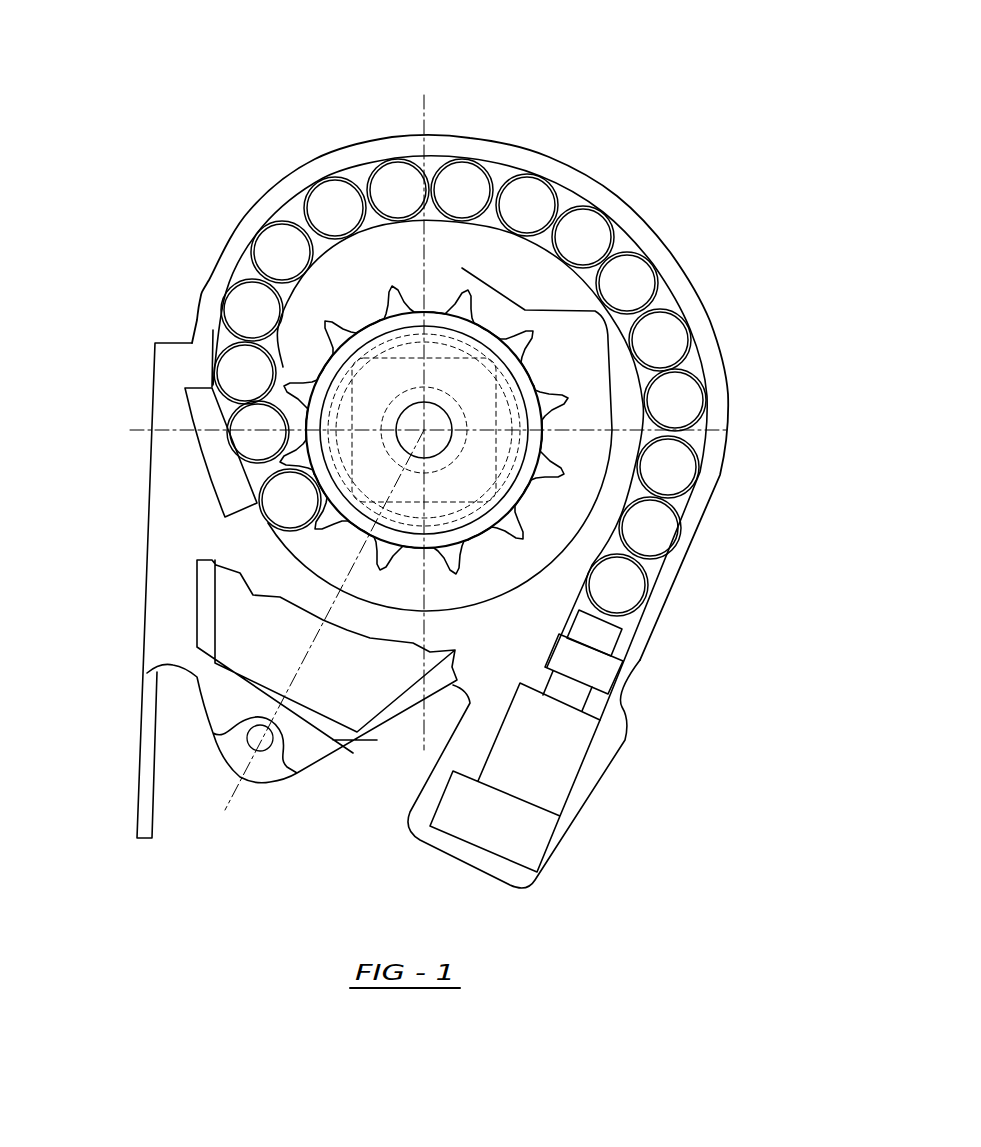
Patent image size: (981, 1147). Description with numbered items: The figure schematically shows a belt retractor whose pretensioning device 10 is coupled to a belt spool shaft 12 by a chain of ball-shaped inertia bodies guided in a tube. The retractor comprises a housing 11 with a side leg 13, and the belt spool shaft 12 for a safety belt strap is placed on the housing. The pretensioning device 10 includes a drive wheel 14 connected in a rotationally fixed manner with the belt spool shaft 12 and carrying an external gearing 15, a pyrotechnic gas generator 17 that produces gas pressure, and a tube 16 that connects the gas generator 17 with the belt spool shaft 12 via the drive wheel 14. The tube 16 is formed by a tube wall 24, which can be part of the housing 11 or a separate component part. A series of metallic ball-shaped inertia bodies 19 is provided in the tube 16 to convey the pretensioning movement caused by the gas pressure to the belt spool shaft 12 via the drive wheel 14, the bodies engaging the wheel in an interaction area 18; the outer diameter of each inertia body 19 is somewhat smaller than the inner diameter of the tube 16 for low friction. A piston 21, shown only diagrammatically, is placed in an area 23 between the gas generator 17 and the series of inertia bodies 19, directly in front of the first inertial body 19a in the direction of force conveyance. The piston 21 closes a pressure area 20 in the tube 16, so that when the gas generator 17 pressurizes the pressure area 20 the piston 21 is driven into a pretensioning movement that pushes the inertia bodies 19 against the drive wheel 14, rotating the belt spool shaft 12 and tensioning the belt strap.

The pretensioning device 10 is at (504, 130).
The housing 11 is at (658, 252).
The belt spool shaft 12 is at (433, 415).
The side leg 13 is at (197, 532).
The drive wheel 14 is at (557, 470).
The external gearing 15 is at (608, 514).
The tube 16 is at (565, 197).
The gas generator 17 is at (550, 765).
The interaction area 18 is at (205, 474).
The inertia bodies 19 is at (272, 248).
The first inertial body 19a is at (630, 598).
The pressure area 20 is at (560, 690).
The piston 21 is at (605, 640).
The area 23 is at (590, 672).
The tube wall 24 is at (350, 183).